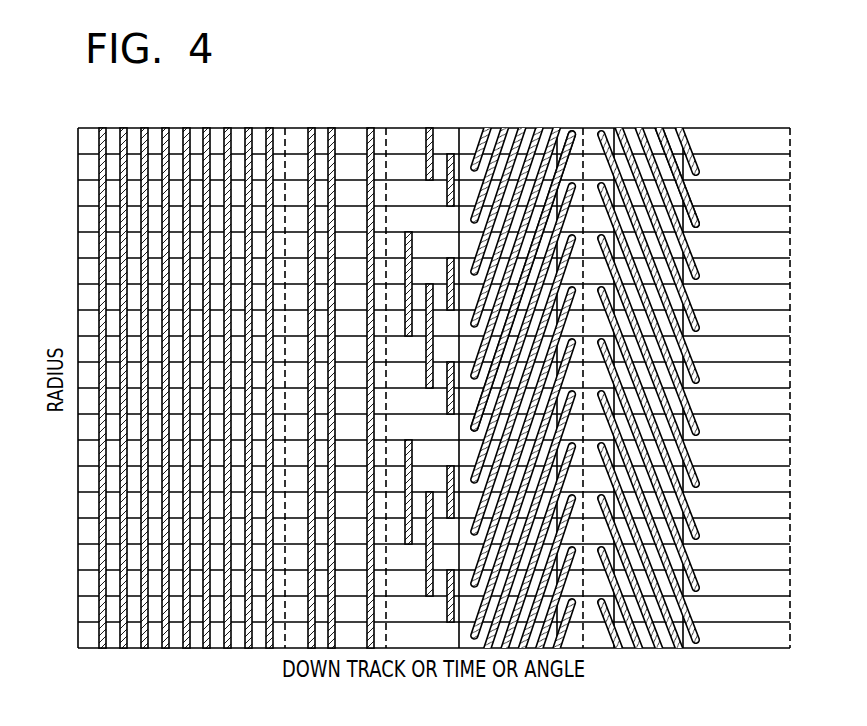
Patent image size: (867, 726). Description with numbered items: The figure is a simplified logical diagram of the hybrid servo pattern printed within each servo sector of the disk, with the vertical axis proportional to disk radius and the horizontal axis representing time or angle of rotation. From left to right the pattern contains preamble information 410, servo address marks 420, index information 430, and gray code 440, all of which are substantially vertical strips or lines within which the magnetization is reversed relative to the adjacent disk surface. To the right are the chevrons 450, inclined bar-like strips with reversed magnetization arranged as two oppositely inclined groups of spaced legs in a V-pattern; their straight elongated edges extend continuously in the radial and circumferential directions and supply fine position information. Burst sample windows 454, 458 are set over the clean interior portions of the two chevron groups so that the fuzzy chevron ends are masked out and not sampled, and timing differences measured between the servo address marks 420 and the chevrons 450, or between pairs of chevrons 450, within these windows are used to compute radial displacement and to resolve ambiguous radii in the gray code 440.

The preamble information 410 is at (98, 123).
The servo address marks 420 is at (342, 123).
The index information 430 is at (382, 123).
The gray code 440 is at (392, 123).
The chevrons 450 is at (565, 145).
The burst sample window 454 is at (488, 123).
The burst sample window 458 is at (615, 123).